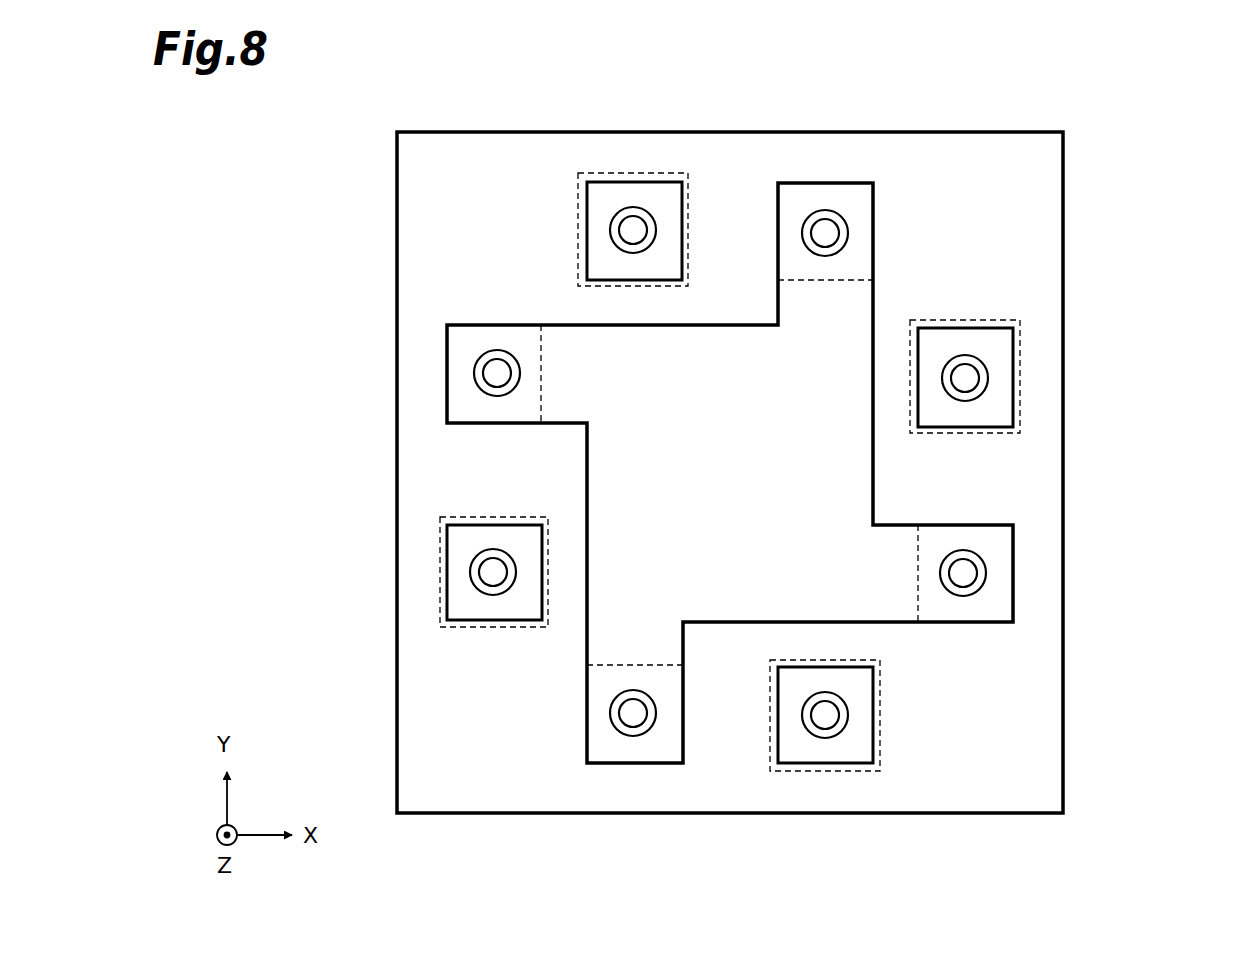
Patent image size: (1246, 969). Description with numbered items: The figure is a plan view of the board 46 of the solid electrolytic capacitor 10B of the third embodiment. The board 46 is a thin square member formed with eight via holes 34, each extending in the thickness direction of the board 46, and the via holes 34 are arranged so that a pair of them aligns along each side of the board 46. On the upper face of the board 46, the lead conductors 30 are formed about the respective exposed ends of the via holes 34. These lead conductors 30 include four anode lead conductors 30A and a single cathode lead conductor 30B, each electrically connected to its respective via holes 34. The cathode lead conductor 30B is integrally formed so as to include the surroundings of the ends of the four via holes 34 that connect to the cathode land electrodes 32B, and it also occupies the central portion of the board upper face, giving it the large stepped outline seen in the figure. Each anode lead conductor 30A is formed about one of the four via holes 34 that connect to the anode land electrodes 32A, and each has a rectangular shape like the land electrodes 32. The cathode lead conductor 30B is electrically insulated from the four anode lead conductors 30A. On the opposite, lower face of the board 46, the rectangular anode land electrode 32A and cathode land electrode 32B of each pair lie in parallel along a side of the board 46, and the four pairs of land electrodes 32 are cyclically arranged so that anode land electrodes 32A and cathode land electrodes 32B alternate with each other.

The solid electrolytic capacitor 10B is at (1125, 186).
The board 46 is at (1076, 487).
The lead conductors 30 is at (721, 472).
The anode lead conductors 30A is at (578, 232).
The cathode lead conductor 30B is at (587, 715).
The land electrodes 32 is at (730, 472).
The anode land electrode 32A is at (632, 288).
The cathode land electrode 32B is at (541, 377).
The via holes 34 is at (655, 205).